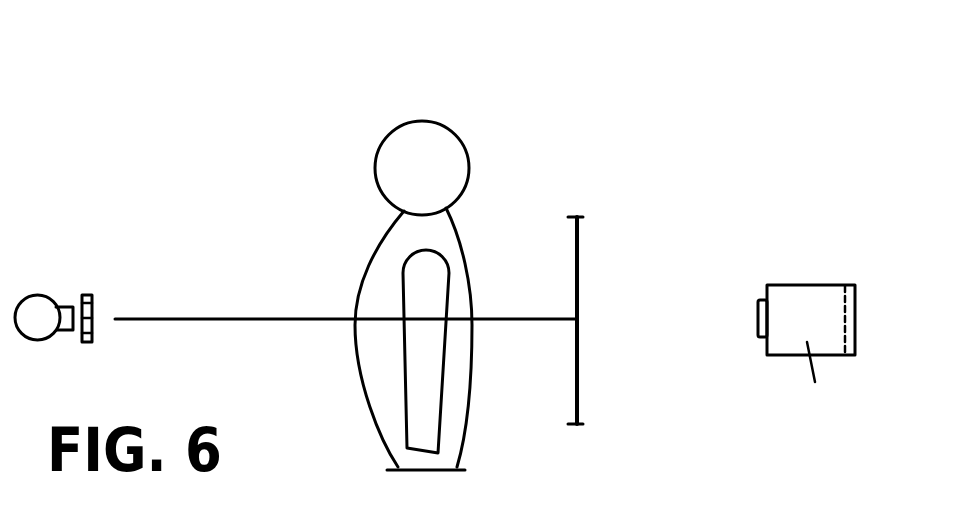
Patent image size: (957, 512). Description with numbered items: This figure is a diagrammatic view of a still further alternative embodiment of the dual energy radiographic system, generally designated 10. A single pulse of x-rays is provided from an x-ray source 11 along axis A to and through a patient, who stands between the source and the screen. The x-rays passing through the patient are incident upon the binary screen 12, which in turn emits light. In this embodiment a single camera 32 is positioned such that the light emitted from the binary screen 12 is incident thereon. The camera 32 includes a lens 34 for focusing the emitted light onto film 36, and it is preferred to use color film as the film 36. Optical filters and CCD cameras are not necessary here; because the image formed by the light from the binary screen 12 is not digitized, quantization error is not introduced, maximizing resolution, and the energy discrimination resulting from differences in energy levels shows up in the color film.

The imaging display analysis device 10 is at (599, 158).
The light source 11 is at (46, 303).
The axis A is at (192, 318).
The binary screen 12 is at (574, 270).
The camera 32 is at (822, 286).
The lens 34 is at (758, 300).
The film 36 is at (856, 309).